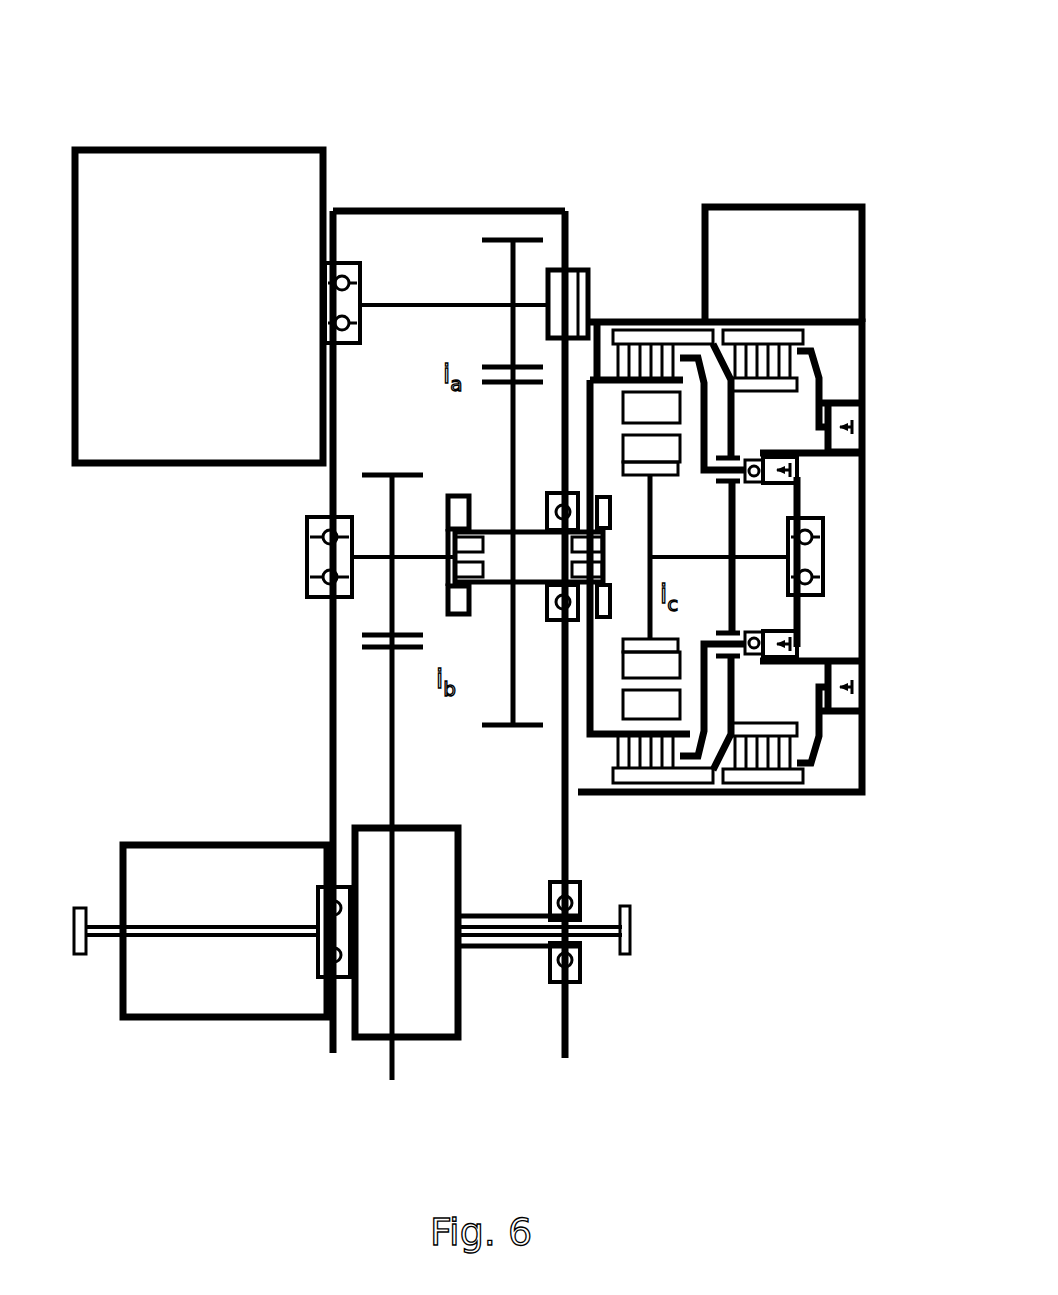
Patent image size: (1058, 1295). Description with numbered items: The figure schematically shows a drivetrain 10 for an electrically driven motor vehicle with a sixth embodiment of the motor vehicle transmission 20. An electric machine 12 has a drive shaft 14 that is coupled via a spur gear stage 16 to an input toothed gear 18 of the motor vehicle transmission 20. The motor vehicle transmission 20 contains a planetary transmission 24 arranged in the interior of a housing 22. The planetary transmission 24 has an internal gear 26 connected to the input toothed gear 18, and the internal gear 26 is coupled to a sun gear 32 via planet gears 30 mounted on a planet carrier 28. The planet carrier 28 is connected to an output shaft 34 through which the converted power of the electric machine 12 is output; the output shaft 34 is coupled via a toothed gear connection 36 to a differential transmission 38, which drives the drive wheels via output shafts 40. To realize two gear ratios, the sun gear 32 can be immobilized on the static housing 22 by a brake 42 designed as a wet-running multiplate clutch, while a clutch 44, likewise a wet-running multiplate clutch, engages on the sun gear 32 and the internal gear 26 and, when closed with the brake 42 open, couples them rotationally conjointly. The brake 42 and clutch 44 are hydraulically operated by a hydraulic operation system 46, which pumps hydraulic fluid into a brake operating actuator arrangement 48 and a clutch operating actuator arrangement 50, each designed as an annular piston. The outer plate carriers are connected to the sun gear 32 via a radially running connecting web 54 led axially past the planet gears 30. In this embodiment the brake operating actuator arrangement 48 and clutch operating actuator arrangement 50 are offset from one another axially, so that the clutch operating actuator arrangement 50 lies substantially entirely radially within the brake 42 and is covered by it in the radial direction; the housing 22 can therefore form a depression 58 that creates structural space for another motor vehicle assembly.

The drivetrain 10 is at (788, 78).
The electric machine 12 is at (165, 178).
The drive shaft 14 is at (412, 305).
The spur gear stage 16 is at (500, 355).
The input toothed gear 18 is at (513, 440).
The motor vehicle transmission 20 is at (675, 823).
The housing 22 is at (858, 362).
The planetary transmission 24 is at (613, 693).
The internal gear 26 is at (605, 372).
The planet carrier 28 is at (618, 475).
The planet gears 30 is at (662, 338).
The sun gear 32 is at (650, 512).
The output shaft 34 is at (375, 557).
The toothed gear connection 36 is at (378, 668).
The differential transmission 38 is at (390, 993).
The output shafts 40 is at (100, 932).
The brake 42 is at (782, 762).
The clutch 44 is at (642, 763).
The hydraulic operation system 46 is at (767, 240).
The brake operating actuator arrangement 48 is at (842, 410).
The clutch operating actuator arrangement 50 is at (783, 633).
The connecting web 54 is at (732, 595).
The depression 58 is at (840, 560).